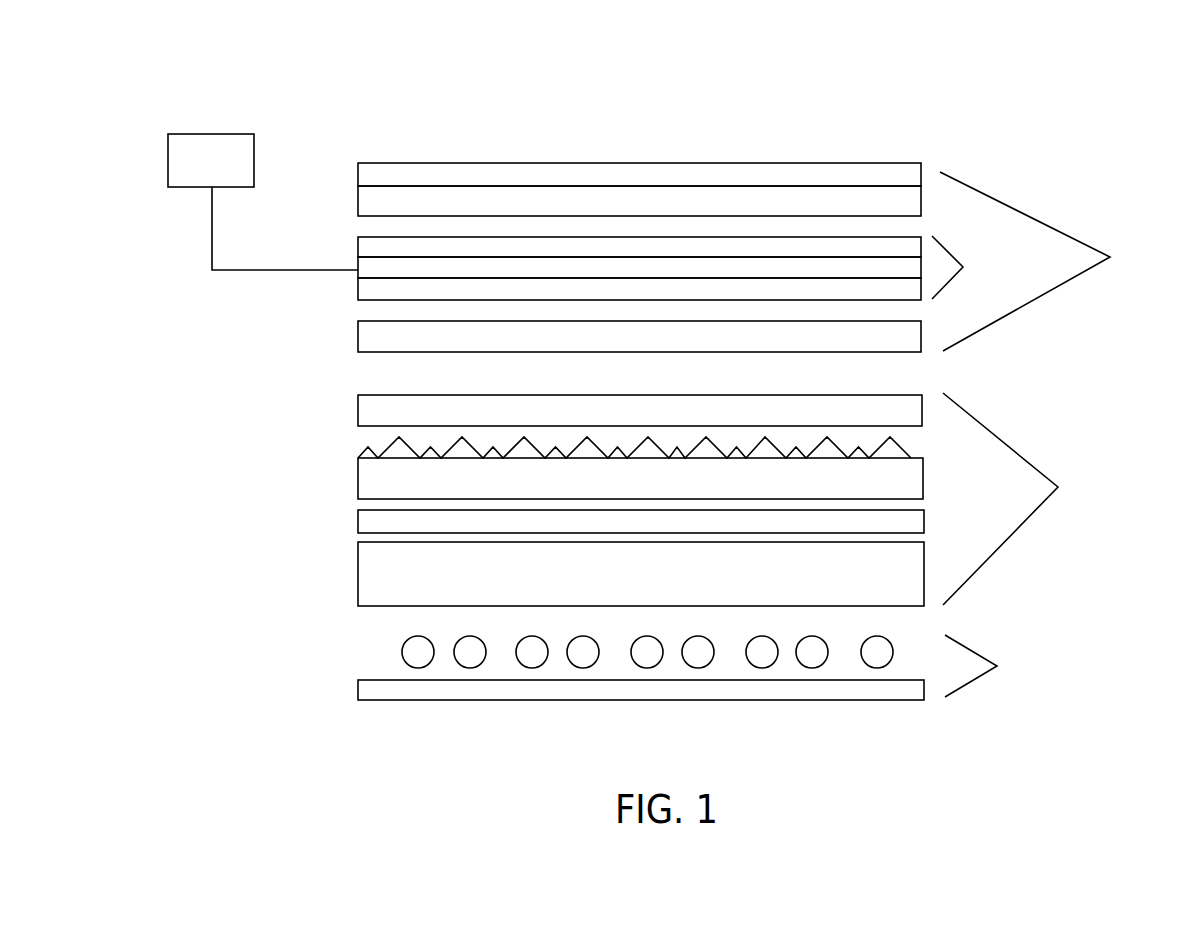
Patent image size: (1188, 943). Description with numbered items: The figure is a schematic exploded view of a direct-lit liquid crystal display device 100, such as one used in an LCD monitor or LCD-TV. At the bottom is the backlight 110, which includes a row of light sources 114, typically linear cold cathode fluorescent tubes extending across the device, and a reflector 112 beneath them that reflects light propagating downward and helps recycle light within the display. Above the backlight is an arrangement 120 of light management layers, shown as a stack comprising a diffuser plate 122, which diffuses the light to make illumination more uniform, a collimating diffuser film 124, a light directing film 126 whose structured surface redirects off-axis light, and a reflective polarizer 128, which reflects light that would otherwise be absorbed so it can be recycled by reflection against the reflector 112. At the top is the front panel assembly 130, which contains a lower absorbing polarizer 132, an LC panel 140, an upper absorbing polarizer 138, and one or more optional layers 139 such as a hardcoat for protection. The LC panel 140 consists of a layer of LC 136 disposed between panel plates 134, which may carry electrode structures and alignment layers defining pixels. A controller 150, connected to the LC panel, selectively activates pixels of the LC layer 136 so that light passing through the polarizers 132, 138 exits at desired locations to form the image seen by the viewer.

The display device 100 is at (902, 108).
The backlight 110 is at (1018, 666).
The reflector 112 is at (370, 690).
The light sources 114 is at (402, 652).
The arrangement of light management layers 120 is at (1044, 499).
The diffuser plate 122 is at (370, 577).
The collimating diffuser film 124 is at (358, 522).
The light directing film 126 is at (358, 480).
The reflective polarizer 128 is at (358, 403).
The front panel assembly 130 is at (1056, 261).
The lower absorbing polarizer 132 is at (367, 333).
The panel plates 134 is at (367, 239).
The LC layer 136 is at (377, 269).
The upper absorbing polarizer 138 is at (367, 196).
The optional layers 139 is at (367, 175).
The LC panel 140 is at (983, 267).
The controller 150 is at (212, 132).